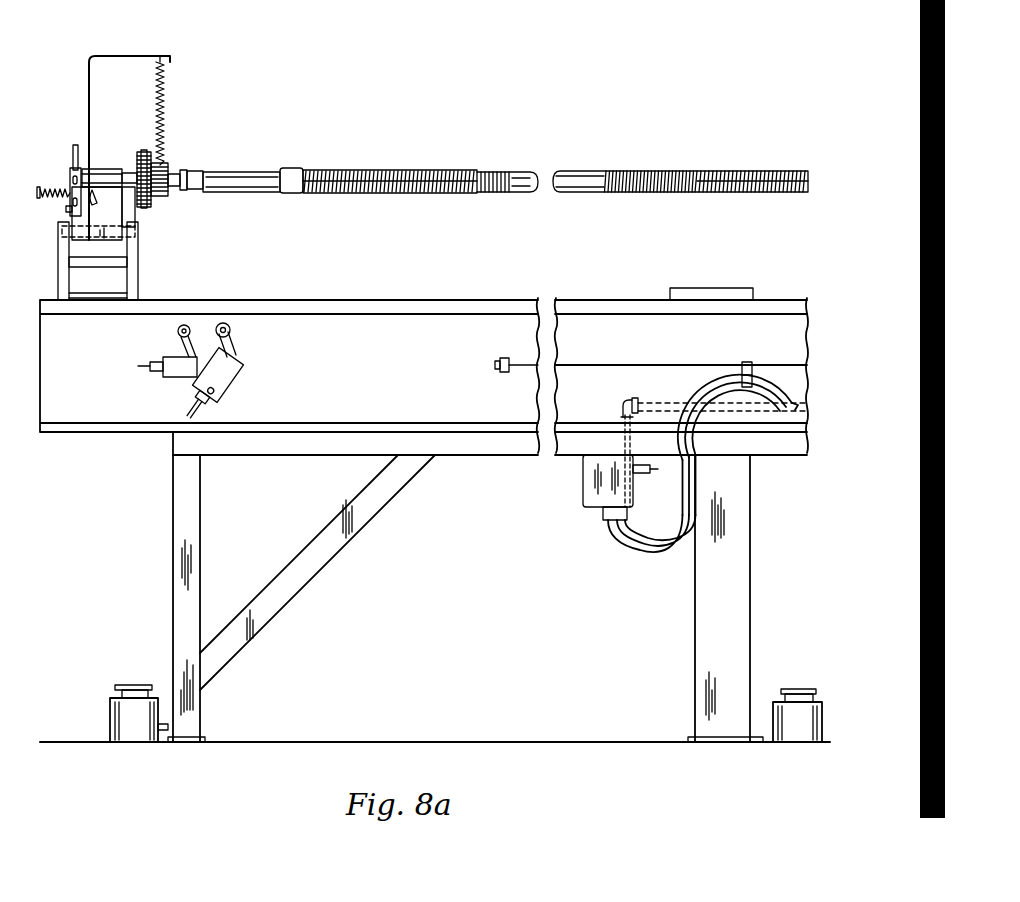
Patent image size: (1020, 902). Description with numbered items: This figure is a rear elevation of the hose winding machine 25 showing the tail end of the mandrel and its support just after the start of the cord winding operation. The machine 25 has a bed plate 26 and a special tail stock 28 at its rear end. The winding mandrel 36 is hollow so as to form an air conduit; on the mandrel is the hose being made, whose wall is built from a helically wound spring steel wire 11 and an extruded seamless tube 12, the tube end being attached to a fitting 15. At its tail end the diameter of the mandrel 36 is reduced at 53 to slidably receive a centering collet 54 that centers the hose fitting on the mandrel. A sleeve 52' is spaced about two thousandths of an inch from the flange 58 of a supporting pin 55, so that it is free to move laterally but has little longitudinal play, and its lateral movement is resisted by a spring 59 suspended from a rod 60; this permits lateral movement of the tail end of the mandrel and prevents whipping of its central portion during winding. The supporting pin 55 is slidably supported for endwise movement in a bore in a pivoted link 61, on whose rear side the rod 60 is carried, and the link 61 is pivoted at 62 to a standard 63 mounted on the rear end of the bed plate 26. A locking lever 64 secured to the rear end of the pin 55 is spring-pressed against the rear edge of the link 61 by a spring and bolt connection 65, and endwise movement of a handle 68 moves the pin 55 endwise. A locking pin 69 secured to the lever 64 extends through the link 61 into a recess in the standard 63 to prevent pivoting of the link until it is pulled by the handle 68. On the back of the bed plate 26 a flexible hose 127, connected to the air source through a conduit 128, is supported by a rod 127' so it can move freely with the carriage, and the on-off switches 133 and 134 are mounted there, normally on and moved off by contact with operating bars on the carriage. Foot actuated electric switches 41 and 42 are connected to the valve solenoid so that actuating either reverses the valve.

The helically wound spring steel wire 11 is at (494, 195).
The extruded seamless tube 12 is at (448, 195).
The fitting 15 is at (237, 193).
The machine 25 is at (170, 621).
The bed plate 26 is at (412, 300).
The tail stock 28 is at (58, 250).
The winding mandrel 36 is at (557, 193).
The foot actuated electric switch 41 is at (111, 716).
The foot actuated electric switch 42 is at (798, 690).
The sleeve 52' is at (184, 165).
The reduced diameter portion 53 is at (170, 197).
The centering collet 54 is at (188, 191).
The supporting pin 55 is at (130, 170).
The flange 58 is at (145, 156).
The spring 59 is at (166, 108).
The rod 60 is at (136, 56).
The pivoted link 61 is at (103, 213).
The pivot 62 is at (138, 240).
The standard 63 is at (58, 273).
The locking lever 64 is at (70, 171).
The spring and bolt connection 65 is at (50, 188).
The handle 68 is at (73, 151).
The locking pin 69 is at (66, 209).
The flexible hose 127 is at (690, 485).
The rod 127' is at (685, 360).
The conduit 128 is at (638, 402).
The on-off switch 133 is at (230, 390).
The on-off switch 134 is at (169, 380).